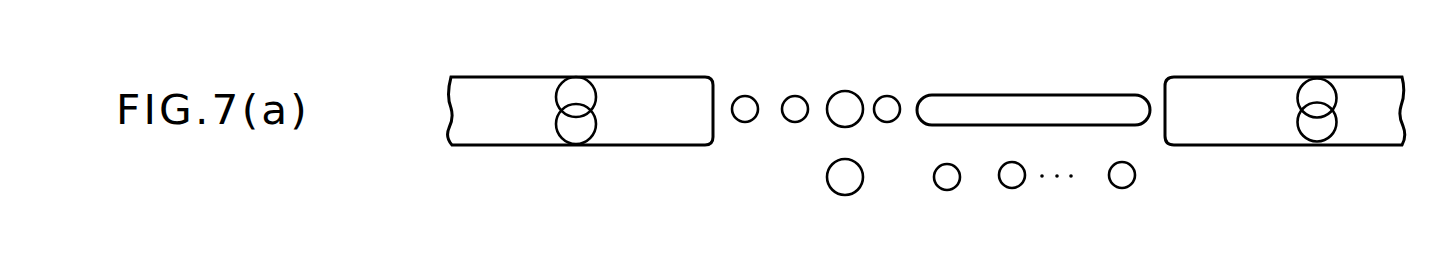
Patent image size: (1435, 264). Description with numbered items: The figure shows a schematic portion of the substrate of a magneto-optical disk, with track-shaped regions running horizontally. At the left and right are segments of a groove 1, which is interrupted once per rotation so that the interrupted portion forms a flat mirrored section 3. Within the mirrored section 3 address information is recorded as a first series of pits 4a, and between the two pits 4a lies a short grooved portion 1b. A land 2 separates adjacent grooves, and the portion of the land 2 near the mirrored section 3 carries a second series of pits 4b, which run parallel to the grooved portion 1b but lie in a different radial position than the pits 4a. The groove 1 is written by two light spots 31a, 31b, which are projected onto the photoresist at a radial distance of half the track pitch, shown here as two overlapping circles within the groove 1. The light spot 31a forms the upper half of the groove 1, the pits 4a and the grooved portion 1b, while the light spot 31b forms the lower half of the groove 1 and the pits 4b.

The groove 1 is at (693, 91).
The grooved portion 1b is at (1030, 95).
The land 2 is at (1200, 168).
The mirrored section 3 is at (818, 130).
The light spot 31a is at (600, 92).
The light spot 31b is at (597, 126).
The pits 4a is at (750, 96).
The pits 4b is at (1008, 188).